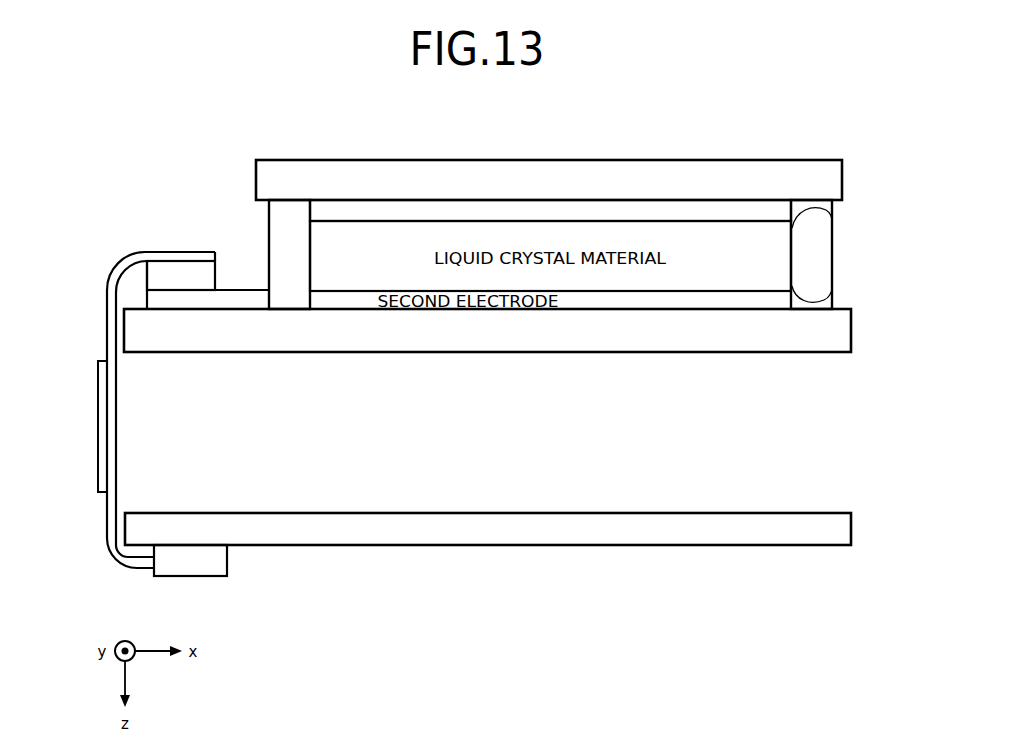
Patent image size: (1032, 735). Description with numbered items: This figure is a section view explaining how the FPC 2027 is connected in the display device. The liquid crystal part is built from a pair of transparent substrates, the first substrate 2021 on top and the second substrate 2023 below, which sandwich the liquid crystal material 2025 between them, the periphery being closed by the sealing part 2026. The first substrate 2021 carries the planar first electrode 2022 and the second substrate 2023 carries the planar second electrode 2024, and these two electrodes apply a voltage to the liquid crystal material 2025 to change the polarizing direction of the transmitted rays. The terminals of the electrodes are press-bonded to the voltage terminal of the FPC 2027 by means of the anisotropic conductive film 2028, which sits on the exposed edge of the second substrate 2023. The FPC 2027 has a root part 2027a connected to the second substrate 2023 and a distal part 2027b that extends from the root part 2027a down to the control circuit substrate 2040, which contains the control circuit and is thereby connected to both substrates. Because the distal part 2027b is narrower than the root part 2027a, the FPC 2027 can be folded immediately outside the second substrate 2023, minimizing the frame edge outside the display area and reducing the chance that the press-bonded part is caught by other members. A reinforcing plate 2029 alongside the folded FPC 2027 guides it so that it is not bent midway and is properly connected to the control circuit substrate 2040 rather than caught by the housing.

The first substrate 2021 is at (842, 176).
The first electrode 2022 is at (793, 209).
The second substrate 2023 is at (851, 328).
The second electrode 2024 is at (820, 301).
The liquid crystal material 2025 is at (812, 210).
The sealing part 2026 is at (268, 245).
The FPC 2027 is at (115, 341).
The root part 2027a is at (158, 252).
The distal part 2027b is at (107, 322).
The anisotropic conductive film 2028 is at (216, 276).
The reinforcing plate 2029 is at (98, 410).
The control circuit substrate 2040 is at (672, 513).